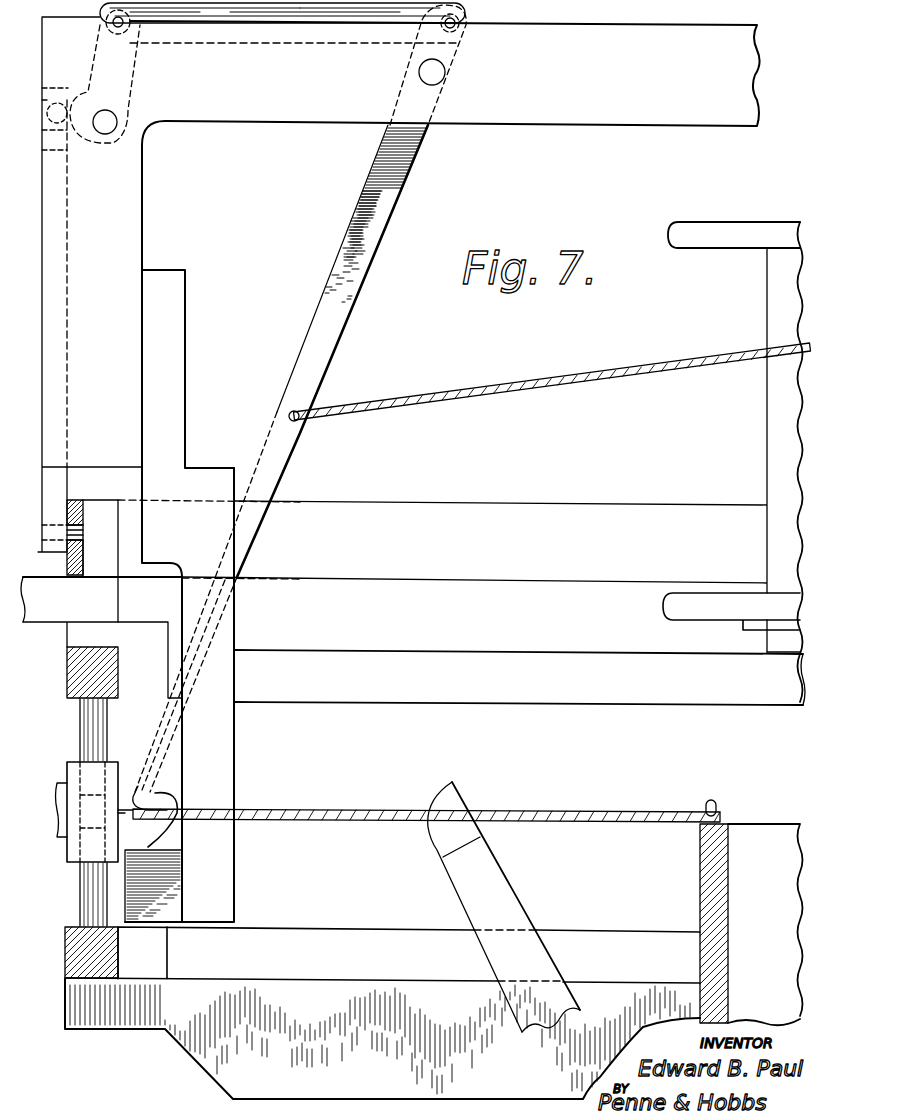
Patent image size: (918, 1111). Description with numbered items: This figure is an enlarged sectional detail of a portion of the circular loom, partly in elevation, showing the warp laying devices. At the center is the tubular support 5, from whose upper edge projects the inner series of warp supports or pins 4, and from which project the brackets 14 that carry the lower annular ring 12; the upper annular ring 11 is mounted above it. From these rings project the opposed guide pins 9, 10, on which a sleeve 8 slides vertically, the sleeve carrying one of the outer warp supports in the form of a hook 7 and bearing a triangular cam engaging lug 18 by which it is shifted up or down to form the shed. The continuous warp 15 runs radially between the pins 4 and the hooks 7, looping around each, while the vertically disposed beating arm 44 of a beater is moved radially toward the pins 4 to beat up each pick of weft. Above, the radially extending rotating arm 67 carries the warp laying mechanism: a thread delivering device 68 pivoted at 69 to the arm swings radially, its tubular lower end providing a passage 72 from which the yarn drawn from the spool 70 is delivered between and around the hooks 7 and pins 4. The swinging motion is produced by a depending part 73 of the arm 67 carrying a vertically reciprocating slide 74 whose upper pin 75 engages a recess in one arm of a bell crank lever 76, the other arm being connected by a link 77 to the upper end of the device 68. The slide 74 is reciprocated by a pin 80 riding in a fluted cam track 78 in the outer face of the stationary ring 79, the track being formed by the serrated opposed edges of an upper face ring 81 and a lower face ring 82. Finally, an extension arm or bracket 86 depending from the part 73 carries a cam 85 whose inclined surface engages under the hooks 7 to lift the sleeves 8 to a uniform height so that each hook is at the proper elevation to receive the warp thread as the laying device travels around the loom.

The warp supports or pins 4 is at (718, 804).
The tubular support 5 is at (722, 882).
The hooks 7 is at (163, 820).
The sleeve 8 is at (73, 819).
The pin 9 is at (90, 725).
The pin 10 is at (88, 897).
The annular supporting frame or ring 11 is at (446, 661).
The annular supporting frame or ring 12 is at (338, 939).
The brackets 14 is at (382, 1039).
The warp 15 is at (500, 402).
The cam engaging lug 18 is at (58, 811).
The beating arm 44 is at (500, 899).
The arm 67 is at (445, 73).
The thread delivering device 68 is at (335, 316).
The pivot 69 is at (436, 74).
The spool 70 is at (772, 448).
The passage 72 is at (289, 414).
The depending part 73 is at (122, 219).
The vertically reciprocating slide 74 is at (67, 336).
The pin 75 is at (62, 120).
The bell crank lever 76 is at (130, 96).
The link 77 is at (282, 23).
The cam track or groove 78 is at (72, 556).
The stationary ring 79 is at (84, 561).
The pin 80 is at (83, 531).
The upper face ring 81 is at (78, 500).
The lower face ring 82 is at (77, 578).
The cam 85 is at (147, 891).
The extension arm or bracket 86 is at (215, 741).